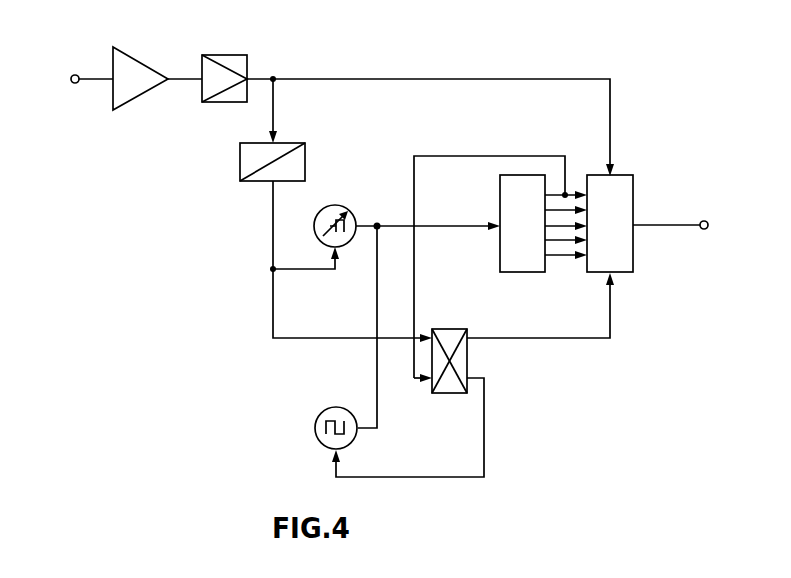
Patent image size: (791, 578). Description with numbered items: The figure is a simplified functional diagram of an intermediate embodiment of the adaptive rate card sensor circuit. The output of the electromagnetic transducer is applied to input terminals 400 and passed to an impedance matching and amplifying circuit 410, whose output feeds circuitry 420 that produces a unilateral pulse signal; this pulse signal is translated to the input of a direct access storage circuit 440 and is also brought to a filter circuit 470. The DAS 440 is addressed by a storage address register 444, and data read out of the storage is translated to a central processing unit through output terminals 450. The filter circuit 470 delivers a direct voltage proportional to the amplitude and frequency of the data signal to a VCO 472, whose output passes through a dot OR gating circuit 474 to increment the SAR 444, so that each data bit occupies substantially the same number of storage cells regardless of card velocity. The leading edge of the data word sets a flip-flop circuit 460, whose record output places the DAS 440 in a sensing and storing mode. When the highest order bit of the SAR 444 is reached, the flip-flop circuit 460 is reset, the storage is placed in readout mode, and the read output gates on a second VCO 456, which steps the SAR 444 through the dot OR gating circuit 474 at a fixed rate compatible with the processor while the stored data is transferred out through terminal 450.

The input terminals 400 is at (72, 78).
The impedance matching and amplifying circuit 410 is at (137, 63).
The unilateral pulse circuitry 420 is at (209, 55).
The filter circuit 470 is at (238, 161).
The VCO 472 is at (320, 211).
The dot OR gating circuit 474 is at (377, 222).
The storage address register 444 is at (513, 273).
The direct access storage circuit 440 is at (633, 246).
The output terminals 450 is at (702, 220).
The flip-flop circuit 460 is at (467, 357).
The VCO 456 is at (321, 411).